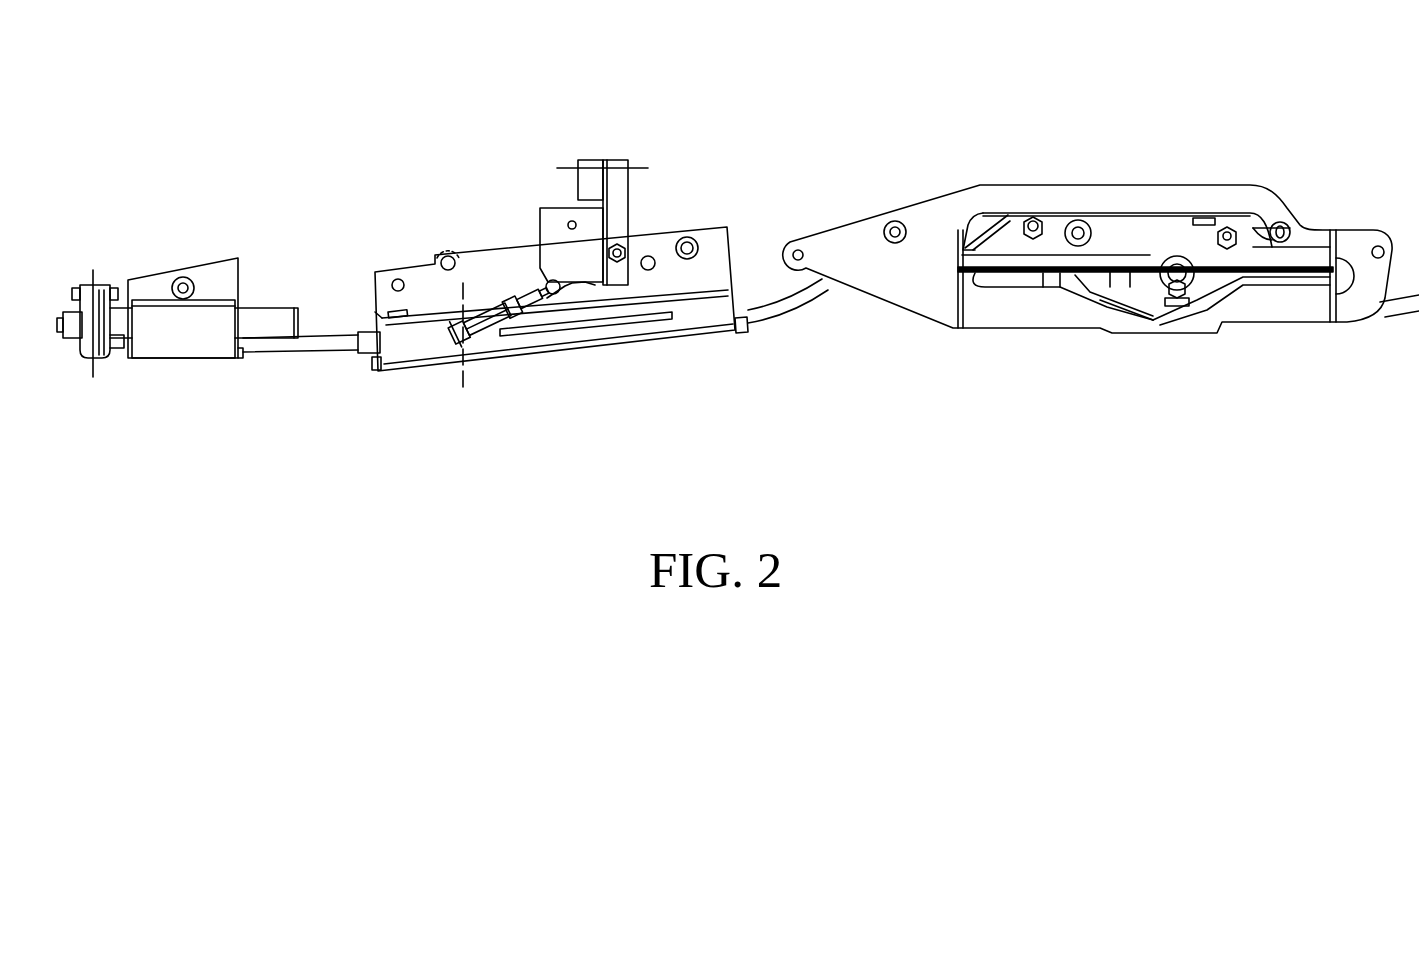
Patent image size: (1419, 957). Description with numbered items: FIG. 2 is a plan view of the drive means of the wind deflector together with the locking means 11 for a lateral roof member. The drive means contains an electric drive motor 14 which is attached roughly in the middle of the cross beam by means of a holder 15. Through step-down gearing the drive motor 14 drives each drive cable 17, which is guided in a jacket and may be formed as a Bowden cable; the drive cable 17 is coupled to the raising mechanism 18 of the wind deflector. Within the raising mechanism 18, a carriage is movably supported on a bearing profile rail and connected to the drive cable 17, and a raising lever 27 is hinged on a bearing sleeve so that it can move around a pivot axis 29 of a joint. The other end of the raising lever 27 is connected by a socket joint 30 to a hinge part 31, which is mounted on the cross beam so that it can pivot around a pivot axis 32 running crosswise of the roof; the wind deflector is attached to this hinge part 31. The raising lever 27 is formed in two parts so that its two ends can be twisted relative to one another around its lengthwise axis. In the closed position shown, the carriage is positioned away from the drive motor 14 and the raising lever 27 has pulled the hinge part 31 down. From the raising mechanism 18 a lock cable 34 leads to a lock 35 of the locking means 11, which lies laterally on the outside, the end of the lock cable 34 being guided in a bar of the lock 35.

The locking means 11 is at (170, 249).
The electric drive motor 14 is at (1175, 318).
The holder 15 is at (954, 207).
The drive cable 17 is at (790, 318).
The raising mechanism 18 is at (658, 348).
The raising lever 27 is at (483, 290).
The pivot axis 29 is at (460, 397).
The socket joint 30 is at (555, 300).
The hinge part 31 is at (582, 212).
The pivot axis 32 is at (642, 160).
The lock cable 34 is at (313, 355).
The lock 35 is at (175, 358).